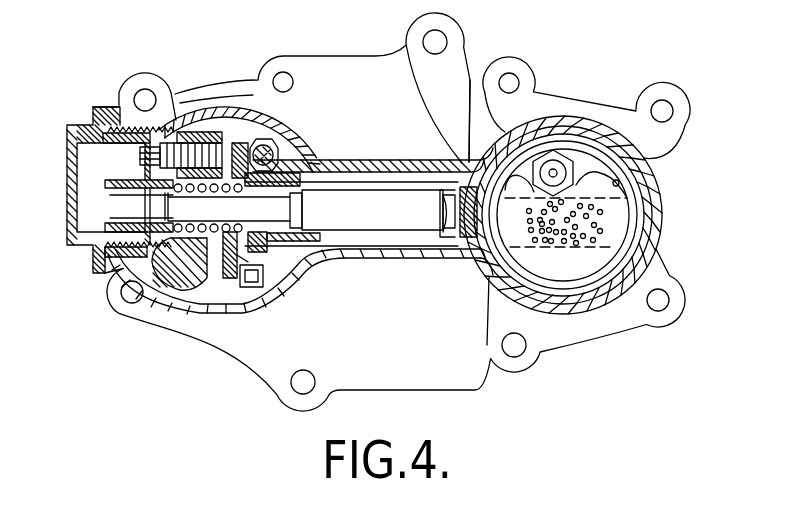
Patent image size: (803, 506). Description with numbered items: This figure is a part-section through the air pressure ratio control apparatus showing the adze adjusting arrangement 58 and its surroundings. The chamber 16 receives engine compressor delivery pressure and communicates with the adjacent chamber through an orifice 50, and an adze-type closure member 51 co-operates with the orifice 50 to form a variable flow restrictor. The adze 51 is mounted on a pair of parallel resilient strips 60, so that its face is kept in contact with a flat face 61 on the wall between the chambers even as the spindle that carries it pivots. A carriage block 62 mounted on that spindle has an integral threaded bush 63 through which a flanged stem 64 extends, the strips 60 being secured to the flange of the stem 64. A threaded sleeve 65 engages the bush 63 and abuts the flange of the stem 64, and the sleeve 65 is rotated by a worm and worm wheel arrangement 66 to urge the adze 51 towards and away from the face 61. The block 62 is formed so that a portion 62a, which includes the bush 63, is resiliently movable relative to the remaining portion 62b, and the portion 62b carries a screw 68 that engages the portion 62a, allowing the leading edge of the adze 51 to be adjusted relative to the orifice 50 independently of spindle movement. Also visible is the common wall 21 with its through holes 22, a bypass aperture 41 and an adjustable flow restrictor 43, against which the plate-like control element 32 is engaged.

The chamber 16 is at (225, 290).
The common wall 21 is at (582, 262).
The through holes 22 is at (598, 190).
The plate-like control element 32 is at (520, 227).
The bypass aperture 41 is at (553, 172).
The adjustable flow restrictor 43 is at (620, 182).
The orifice 50 is at (468, 172).
The adze-type closure member 51 is at (458, 180).
The adjusting arrangement 58 is at (220, 128).
The parallel resilient strips 60 is at (377, 188).
The flat face 61 is at (478, 232).
The carriage block 62 is at (183, 270).
The resiliently movable portion of carriage block 62a is at (243, 100).
The remaining portion of carriage block 62b is at (182, 110).
The threaded bush 63 is at (292, 170).
The flanged stem 64 is at (245, 210).
The threaded sleeve 65 is at (268, 260).
The worm and worm wheel arrangement 66 is at (292, 107).
The screw 68 is at (143, 127).